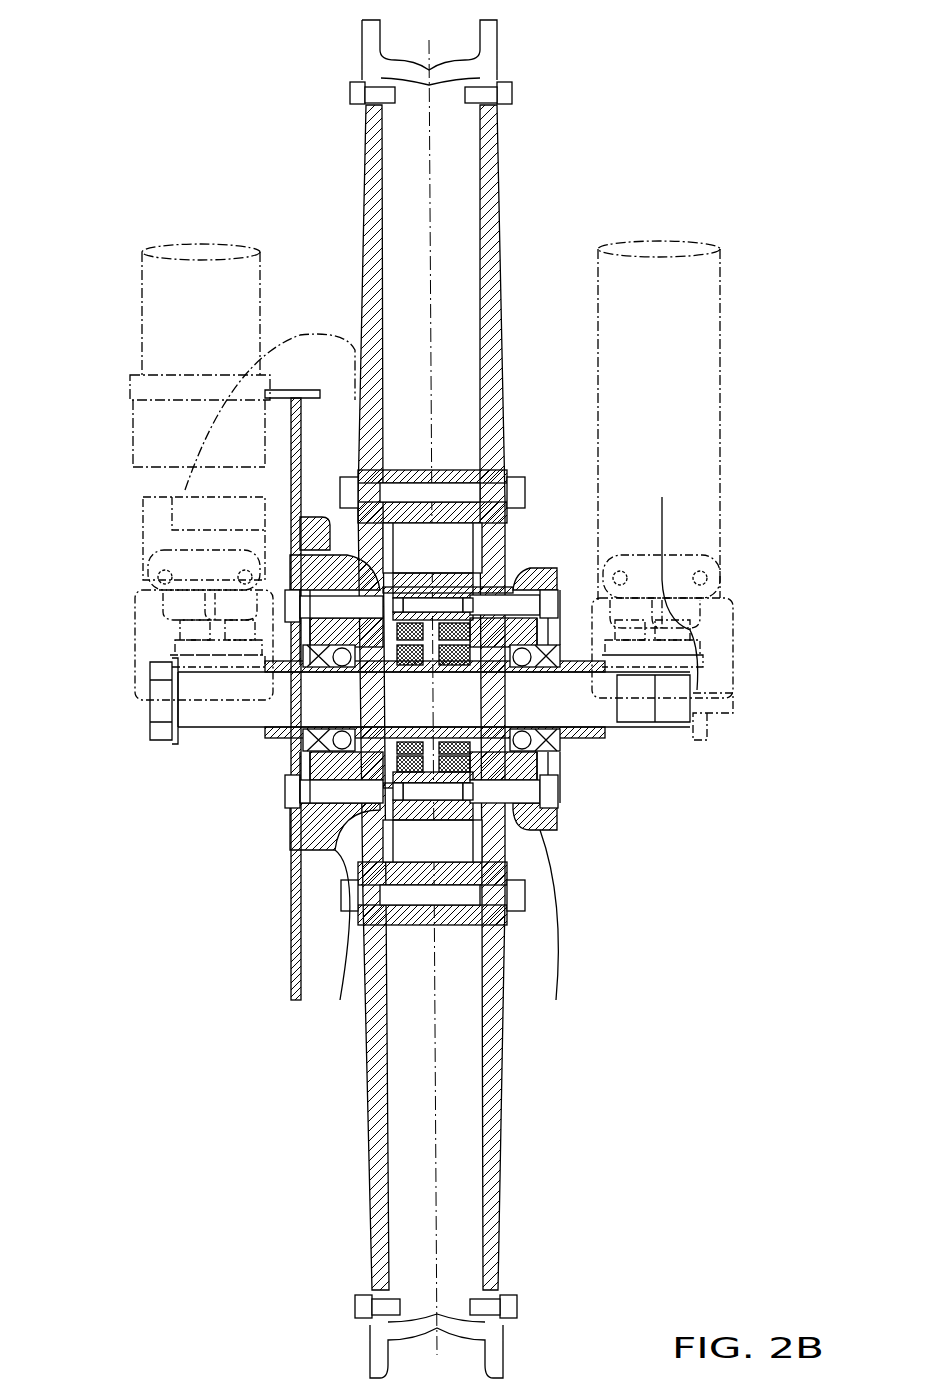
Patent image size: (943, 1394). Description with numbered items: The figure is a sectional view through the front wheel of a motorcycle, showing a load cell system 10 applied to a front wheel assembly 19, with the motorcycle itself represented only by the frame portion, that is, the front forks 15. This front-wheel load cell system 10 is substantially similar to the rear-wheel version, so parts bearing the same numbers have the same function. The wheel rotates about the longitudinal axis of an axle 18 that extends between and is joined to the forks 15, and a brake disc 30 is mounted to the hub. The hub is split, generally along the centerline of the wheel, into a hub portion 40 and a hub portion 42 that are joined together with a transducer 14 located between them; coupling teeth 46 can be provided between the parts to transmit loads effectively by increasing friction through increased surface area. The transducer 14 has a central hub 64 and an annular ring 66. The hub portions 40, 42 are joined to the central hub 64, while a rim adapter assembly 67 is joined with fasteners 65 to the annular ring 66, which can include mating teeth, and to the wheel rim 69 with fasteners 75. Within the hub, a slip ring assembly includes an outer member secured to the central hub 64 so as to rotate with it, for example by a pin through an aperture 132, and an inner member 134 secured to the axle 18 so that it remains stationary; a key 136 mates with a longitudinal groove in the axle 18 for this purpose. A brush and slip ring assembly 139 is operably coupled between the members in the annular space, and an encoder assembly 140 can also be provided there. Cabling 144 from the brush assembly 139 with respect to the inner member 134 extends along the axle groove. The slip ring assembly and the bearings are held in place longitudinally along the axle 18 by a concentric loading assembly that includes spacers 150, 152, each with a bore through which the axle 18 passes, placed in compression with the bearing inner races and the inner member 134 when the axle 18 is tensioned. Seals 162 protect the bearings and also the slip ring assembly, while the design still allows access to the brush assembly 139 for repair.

The load cell system 10 is at (258, 177).
The transducer 14 is at (457, 465).
The frame portion (front forks) 15 is at (140, 327).
The axle 18 is at (195, 716).
The front wheel assembly 19 is at (544, 212).
The brake disc 30 is at (298, 950).
The hub portion 40 is at (322, 882).
The hub portion 42 is at (541, 832).
The coupling teeth 46 is at (396, 805).
The central hub 64 is at (440, 578).
The fasteners 65 is at (506, 480).
The annular ring 66 is at (430, 462).
The rim adapter assembly 67 is at (340, 196).
The wheel rim 69 is at (483, 42).
The fasteners 75 is at (348, 91).
The aperture 132 is at (415, 622).
The inner member 134 is at (580, 590).
The key 136 is at (470, 690).
The brush and slip ring assembly 139 is at (562, 572).
The encoder assembly 140 is at (400, 656).
The cabling 144 is at (664, 523).
The spacer 150 is at (300, 792).
The spacer 152 is at (282, 740).
The seals 162 is at (532, 774).